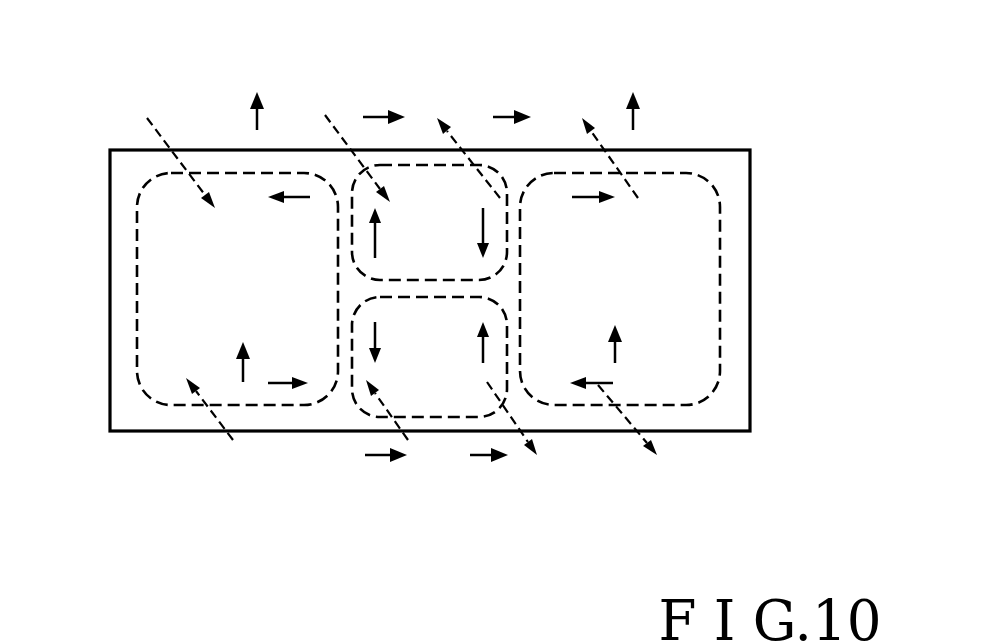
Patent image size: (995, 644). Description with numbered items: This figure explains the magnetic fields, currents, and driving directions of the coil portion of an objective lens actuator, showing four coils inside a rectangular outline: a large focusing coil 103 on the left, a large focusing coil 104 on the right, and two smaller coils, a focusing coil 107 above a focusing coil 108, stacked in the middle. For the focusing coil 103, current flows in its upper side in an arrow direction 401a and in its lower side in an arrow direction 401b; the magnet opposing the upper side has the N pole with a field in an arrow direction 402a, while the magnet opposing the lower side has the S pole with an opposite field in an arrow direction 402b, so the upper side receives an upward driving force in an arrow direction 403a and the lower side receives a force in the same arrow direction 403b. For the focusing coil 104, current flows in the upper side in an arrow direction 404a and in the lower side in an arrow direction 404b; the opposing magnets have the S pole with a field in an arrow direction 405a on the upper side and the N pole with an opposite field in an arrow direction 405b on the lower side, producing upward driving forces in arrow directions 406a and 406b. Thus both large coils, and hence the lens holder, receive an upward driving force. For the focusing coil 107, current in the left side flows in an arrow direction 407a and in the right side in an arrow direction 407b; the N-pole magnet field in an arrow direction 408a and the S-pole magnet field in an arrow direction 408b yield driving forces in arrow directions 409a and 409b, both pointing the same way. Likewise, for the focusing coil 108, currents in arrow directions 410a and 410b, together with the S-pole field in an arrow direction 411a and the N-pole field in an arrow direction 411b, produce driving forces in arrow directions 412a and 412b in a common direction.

The focusing coil 103 is at (137, 246).
The focusing coil 104 is at (680, 170).
The focusing coil 107 is at (417, 165).
The focusing coil 108 is at (437, 420).
The arrow direction 401a is at (296, 200).
The arrow direction 401b is at (277, 386).
The arrow direction 402a is at (160, 133).
The arrow direction 402b is at (228, 442).
The arrow direction 403a is at (250, 112).
The arrow direction 403b is at (240, 350).
The arrow direction 404a is at (578, 202).
The arrow direction 404b is at (583, 388).
The arrow direction 405a is at (598, 124).
The arrow direction 405b is at (652, 457).
The arrow direction 406a is at (640, 110).
The arrow direction 406b is at (610, 340).
The arrow direction 407a is at (383, 222).
The arrow direction 407b is at (480, 225).
The arrow direction 408a is at (330, 120).
The arrow direction 408b is at (447, 118).
The arrow direction 409a is at (372, 112).
The arrow direction 409b is at (500, 115).
The arrow direction 410a is at (383, 348).
The arrow direction 410b is at (478, 345).
The arrow direction 411a is at (408, 445).
The arrow direction 411b is at (537, 460).
The arrow direction 412a is at (372, 460).
The arrow direction 412b is at (498, 460).